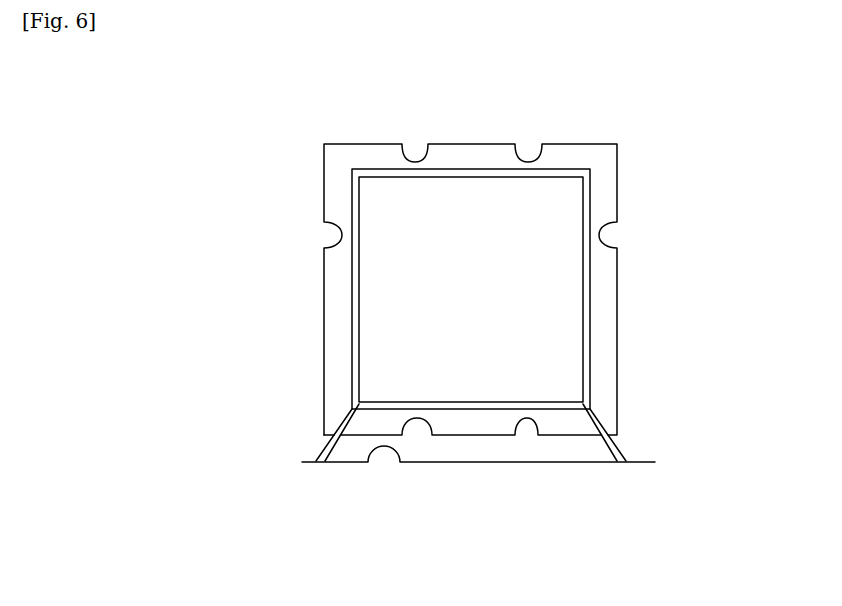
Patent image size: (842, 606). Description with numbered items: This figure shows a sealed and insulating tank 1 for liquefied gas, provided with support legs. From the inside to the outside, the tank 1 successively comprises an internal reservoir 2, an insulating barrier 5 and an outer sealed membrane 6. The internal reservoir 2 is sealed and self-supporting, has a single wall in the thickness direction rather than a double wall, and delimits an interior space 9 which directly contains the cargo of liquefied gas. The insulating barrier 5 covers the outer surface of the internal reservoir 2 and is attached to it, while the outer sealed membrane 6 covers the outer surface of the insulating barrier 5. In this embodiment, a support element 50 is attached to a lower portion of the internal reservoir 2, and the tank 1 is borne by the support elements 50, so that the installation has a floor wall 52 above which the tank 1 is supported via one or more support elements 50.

The tank 1 is at (698, 92).
The internal reservoir 2 is at (608, 268).
The insulating barrier 5 is at (626, 178).
The outer sealed membrane 6 is at (582, 123).
The interior space 9 is at (450, 190).
The support element 50 is at (319, 451).
The floor wall 52 is at (370, 462).